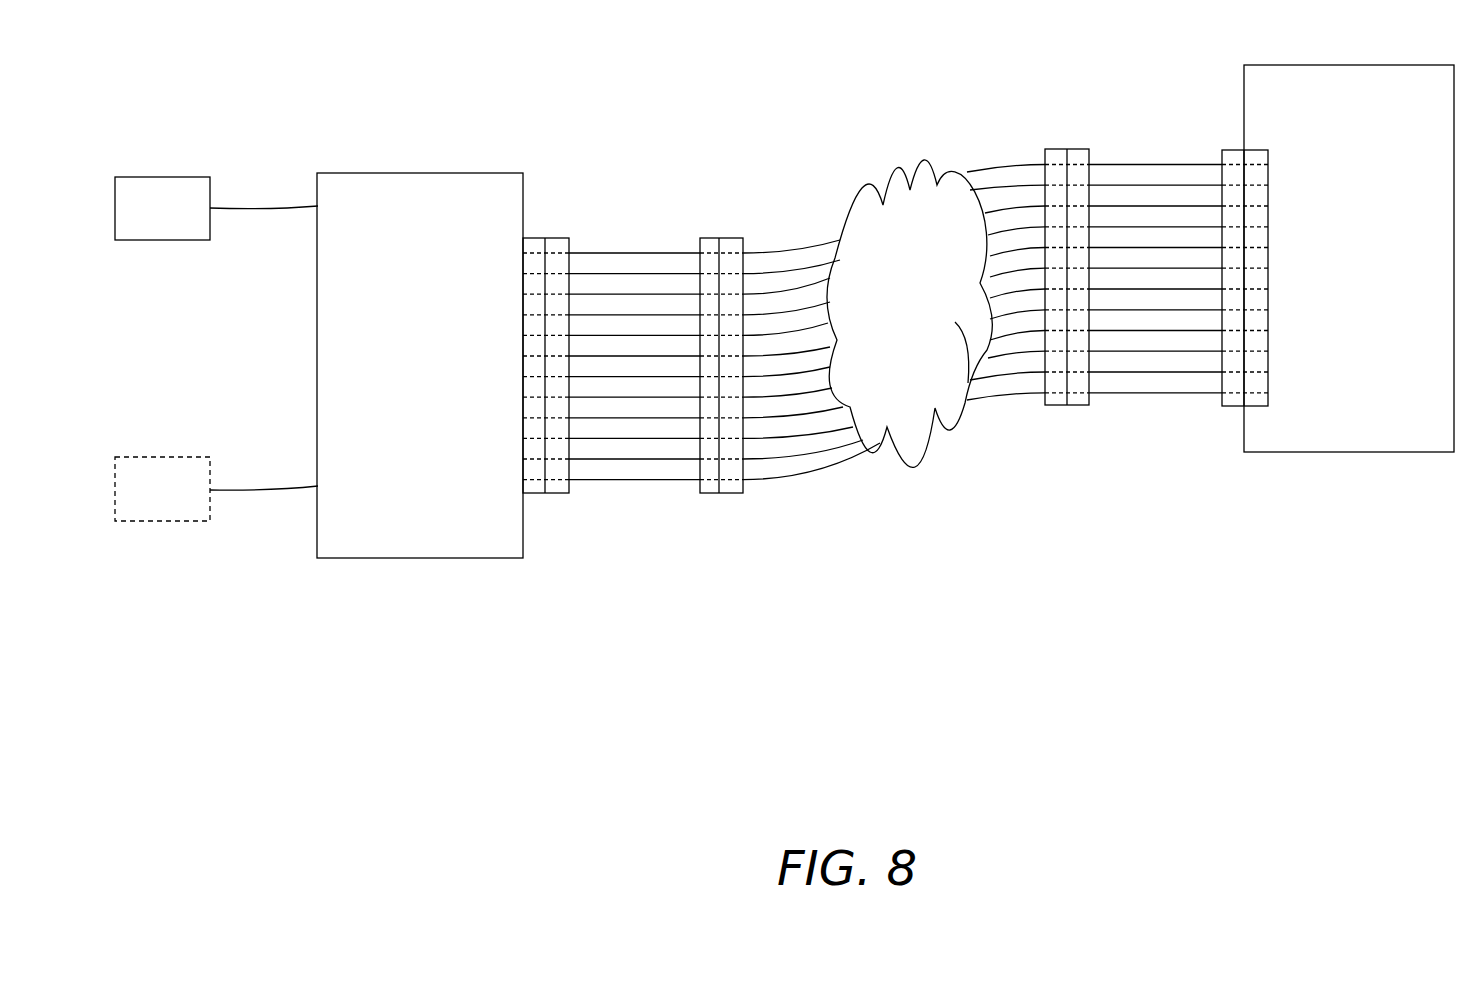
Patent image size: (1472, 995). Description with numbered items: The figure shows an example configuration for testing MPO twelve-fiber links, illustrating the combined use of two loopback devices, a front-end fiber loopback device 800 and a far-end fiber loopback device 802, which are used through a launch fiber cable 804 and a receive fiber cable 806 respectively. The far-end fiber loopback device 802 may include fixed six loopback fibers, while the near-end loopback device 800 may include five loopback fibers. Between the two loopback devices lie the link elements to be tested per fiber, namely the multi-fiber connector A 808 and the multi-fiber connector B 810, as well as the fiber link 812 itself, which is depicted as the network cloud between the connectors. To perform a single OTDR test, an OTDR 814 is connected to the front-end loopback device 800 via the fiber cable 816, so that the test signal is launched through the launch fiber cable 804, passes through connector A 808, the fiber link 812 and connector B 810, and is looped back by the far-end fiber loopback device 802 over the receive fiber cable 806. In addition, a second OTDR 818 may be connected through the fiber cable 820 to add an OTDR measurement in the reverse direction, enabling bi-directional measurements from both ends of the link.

The front-end fiber loopback device 800 is at (464, 172).
The far-end fiber loopback device 802 is at (1323, 61).
The launch fiber cable 804 is at (655, 251).
The receive fiber cable 806 is at (1162, 158).
The multi-fiber connector A 808 is at (727, 235).
The multi-fiber connector B 810 is at (1015, 162).
The fiber link 812 is at (915, 466).
The OTDR 814 is at (175, 175).
The fiber cable 816 is at (289, 205).
The OTDR 818 is at (175, 453).
The fiber cable 820 is at (293, 480).